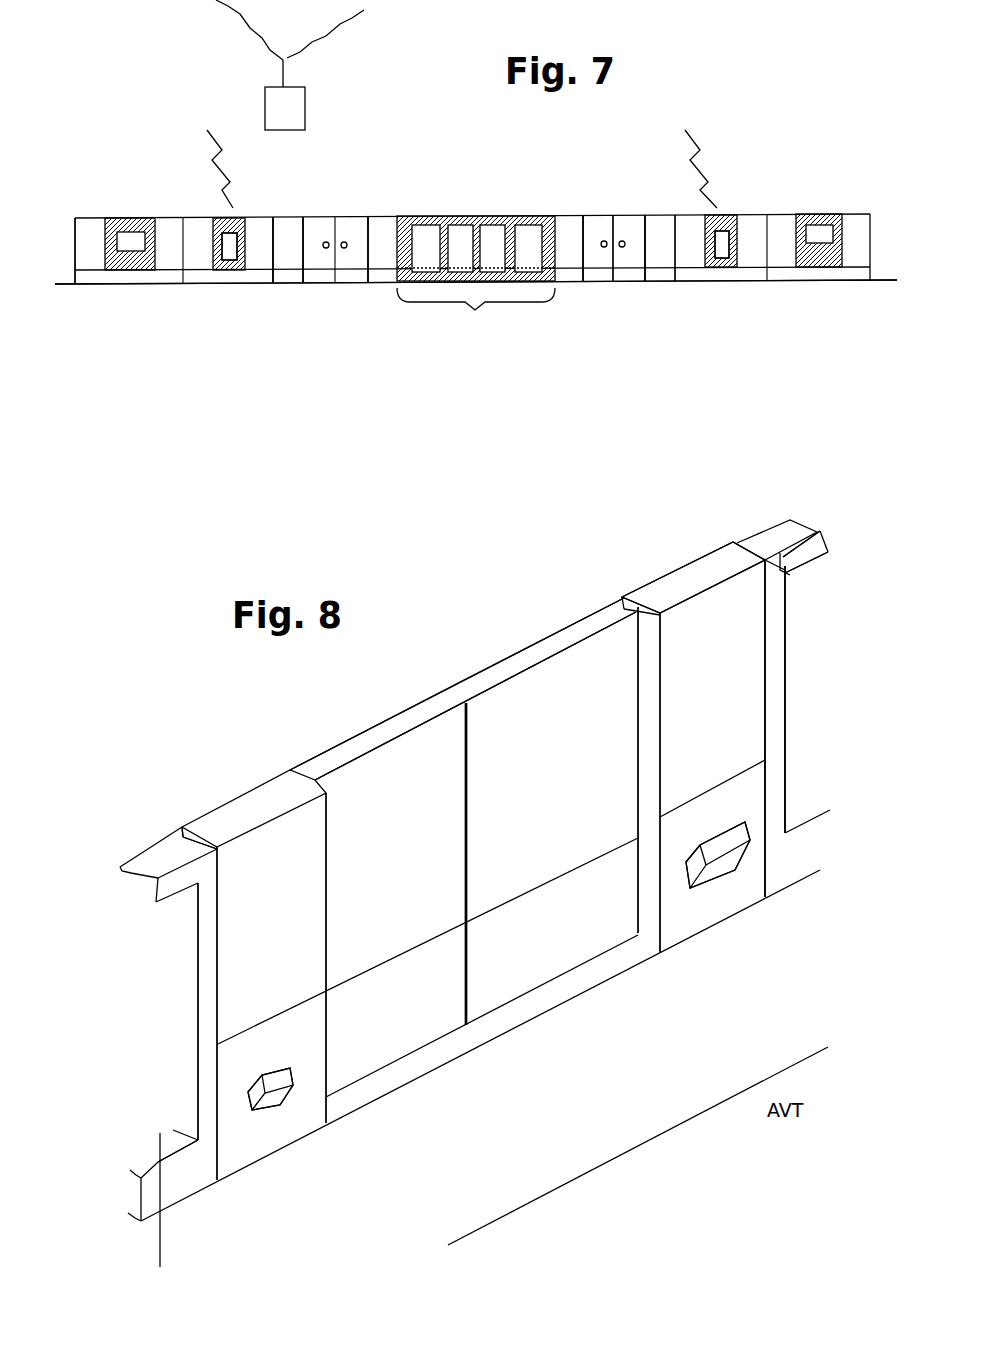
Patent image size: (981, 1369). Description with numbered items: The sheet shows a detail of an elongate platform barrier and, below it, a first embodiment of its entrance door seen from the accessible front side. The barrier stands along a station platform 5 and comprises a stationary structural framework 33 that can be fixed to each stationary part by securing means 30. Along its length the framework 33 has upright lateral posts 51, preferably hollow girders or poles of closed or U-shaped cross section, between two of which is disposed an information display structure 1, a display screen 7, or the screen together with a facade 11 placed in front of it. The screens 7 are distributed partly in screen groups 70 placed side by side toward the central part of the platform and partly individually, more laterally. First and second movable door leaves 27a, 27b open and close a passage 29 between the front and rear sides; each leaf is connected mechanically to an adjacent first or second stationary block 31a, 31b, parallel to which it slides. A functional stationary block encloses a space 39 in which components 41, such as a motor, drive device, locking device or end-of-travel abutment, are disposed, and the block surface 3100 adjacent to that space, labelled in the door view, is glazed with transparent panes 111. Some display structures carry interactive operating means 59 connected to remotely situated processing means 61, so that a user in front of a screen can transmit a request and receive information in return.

In FIG. 7, the information display structure 1 is at (520, 170).
In FIG. 8, the information display structure 1 is at (795, 636).
In FIG. 7, the station platform 5 is at (92, 286).
In FIG. 8, the station platform 5 is at (650, 1107).
In FIG. 7, the display screen 7 is at (522, 215).
In FIG. 8, the display screen 7 is at (492, 861).
In FIG. 7, the facade 11 is at (218, 232).
In FIG. 7, the first movable door leaf 27a is at (305, 268).
In FIG. 8, the first movable door leaf 27a is at (385, 732).
In FIG. 7, the second movable door leaf 27b is at (356, 268).
In FIG. 8, the second movable door leaf 27b is at (517, 650).
In FIG. 7, the passage 29 is at (328, 260).
In FIG. 8, the passage 29 is at (430, 752).
In FIG. 8, the means for securing the stationary part 30 is at (162, 1234).
In FIG. 7, the first stationary block 31a is at (284, 236).
In FIG. 8, the first stationary block 31a is at (214, 797).
In FIG. 7, the second stationary block 31b is at (382, 238).
In FIG. 8, the second stationary block 31b is at (636, 660).
In FIG. 7, the structural framework 33 is at (70, 222).
In FIG. 8, the space 39 is at (304, 1100).
In FIG. 8, the components 41 is at (245, 1105).
In FIG. 7, the upright lateral post 51 is at (106, 230).
In FIG. 8, the upright lateral post 51 is at (778, 557).
In FIG. 7, the interactive operating means 59 is at (232, 262).
In FIG. 7, the processing means 61 is at (284, 106).
In FIG. 7, the screen group 70 is at (476, 315).
In FIG. 8, the pane 111 is at (491, 870).
In FIG. 8, the side plate 3100 is at (250, 990).